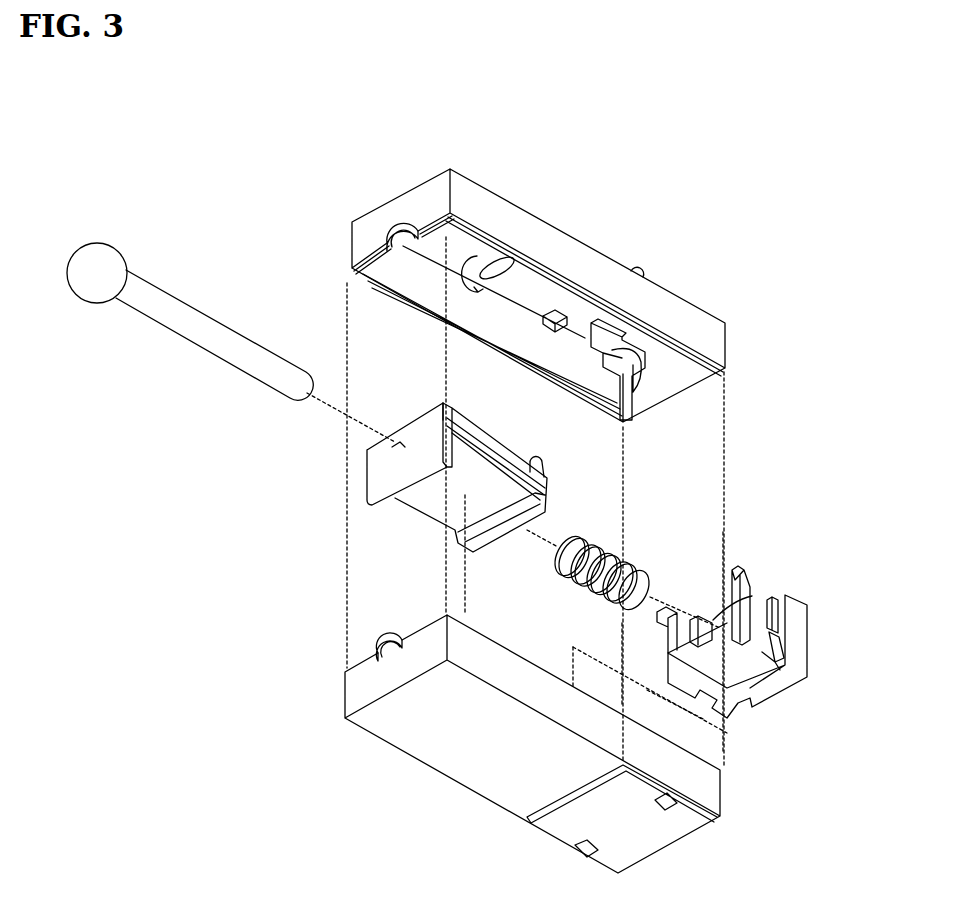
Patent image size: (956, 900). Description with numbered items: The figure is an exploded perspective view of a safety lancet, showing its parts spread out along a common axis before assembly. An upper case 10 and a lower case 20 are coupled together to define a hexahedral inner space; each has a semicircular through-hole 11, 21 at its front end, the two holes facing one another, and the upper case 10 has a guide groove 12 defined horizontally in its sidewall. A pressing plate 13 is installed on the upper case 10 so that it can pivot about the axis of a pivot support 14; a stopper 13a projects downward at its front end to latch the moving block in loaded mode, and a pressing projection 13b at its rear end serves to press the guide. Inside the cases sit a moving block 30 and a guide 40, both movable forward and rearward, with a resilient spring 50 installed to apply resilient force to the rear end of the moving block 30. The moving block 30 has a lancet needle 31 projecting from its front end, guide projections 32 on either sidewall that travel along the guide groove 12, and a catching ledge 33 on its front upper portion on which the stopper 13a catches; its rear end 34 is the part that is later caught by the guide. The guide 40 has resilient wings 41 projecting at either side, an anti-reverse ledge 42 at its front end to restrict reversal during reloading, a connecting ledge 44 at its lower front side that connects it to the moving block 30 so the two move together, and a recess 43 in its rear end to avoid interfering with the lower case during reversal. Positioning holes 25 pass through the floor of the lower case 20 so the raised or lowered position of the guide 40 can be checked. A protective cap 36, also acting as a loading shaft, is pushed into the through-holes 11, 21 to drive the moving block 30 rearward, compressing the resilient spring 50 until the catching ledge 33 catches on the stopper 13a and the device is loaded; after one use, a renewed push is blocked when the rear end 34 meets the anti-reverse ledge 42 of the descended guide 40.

The upper case 10 is at (722, 338).
The semicircular through-hole 11 is at (392, 242).
The guide groove 12 is at (422, 307).
The pressing plate 13 is at (570, 280).
The stopper 13a is at (497, 266).
The pressing projection 13b is at (633, 395).
The pivot support 14 is at (642, 268).
The lower case 20 is at (715, 790).
The semicircular through-hole 21 is at (380, 652).
The positioning holes 25 is at (673, 808).
The moving block 30 is at (425, 517).
The lancet needle 31 is at (360, 450).
The guide projections 32 is at (492, 442).
The catching ledge 33 is at (437, 402).
The rear end 34 is at (541, 463).
The protective cap 36 is at (237, 360).
The guide 40 is at (808, 642).
The resilient wings 41 is at (786, 680).
The anti-reverse ledge 42 is at (733, 576).
The recess 43 is at (755, 695).
The connecting ledge 44 is at (752, 596).
The resilient spring 50 is at (636, 568).